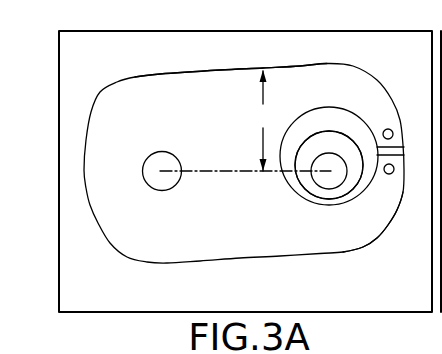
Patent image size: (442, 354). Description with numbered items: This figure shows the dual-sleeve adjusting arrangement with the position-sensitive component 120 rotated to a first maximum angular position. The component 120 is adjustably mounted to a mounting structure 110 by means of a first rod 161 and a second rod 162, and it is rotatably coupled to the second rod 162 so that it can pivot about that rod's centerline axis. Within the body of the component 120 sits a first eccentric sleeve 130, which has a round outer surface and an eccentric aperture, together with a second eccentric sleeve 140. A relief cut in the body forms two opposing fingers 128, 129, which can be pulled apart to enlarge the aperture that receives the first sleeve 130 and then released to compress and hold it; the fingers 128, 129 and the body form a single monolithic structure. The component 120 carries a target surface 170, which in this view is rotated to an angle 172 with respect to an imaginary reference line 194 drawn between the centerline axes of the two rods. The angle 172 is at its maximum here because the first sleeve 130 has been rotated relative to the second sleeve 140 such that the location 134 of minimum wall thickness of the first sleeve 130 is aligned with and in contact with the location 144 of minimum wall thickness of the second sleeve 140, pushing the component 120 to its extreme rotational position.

The mounting structure 110 is at (68, 88).
The position-sensitive component 120 is at (133, 100).
The finger 128 is at (392, 122).
The finger 129 is at (393, 180).
The first eccentric sleeve 130 is at (333, 118).
The location of minimum wall thickness of the first sleeve 134 is at (328, 200).
The second eccentric sleeve 140 is at (308, 187).
The location of minimum wall thickness of the second sleeve 144 is at (327, 194).
The first rod 161 is at (333, 180).
The second rod 162 is at (157, 163).
The target surface 170 is at (200, 73).
The angle 172 is at (263, 120).
The imaginary reference line 194 is at (221, 171).